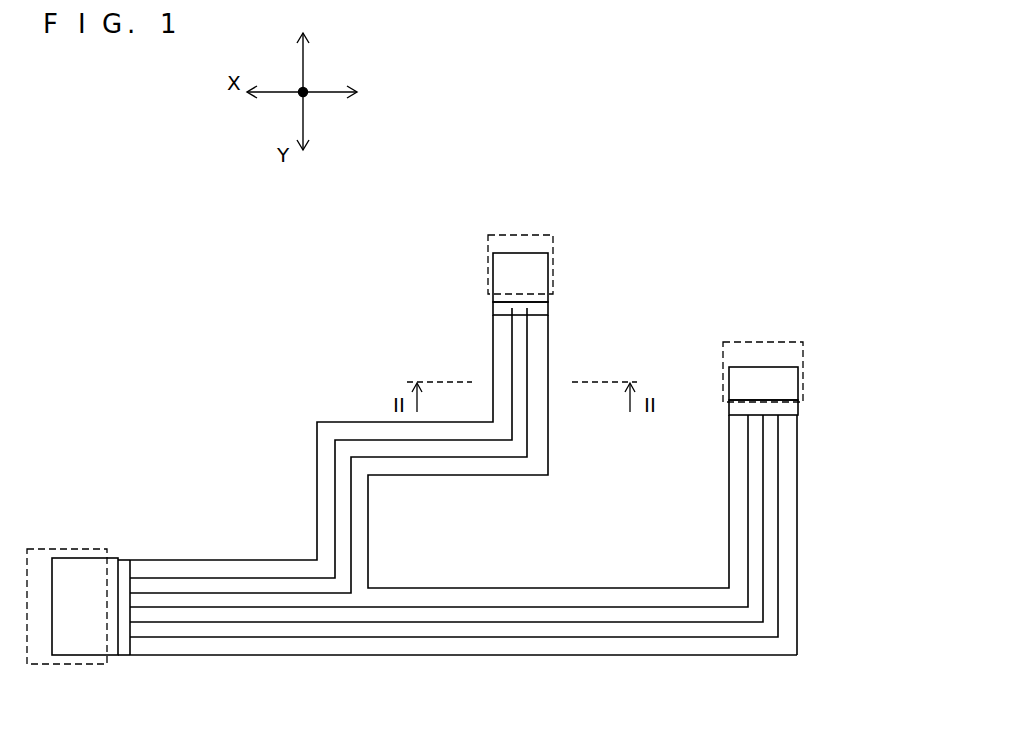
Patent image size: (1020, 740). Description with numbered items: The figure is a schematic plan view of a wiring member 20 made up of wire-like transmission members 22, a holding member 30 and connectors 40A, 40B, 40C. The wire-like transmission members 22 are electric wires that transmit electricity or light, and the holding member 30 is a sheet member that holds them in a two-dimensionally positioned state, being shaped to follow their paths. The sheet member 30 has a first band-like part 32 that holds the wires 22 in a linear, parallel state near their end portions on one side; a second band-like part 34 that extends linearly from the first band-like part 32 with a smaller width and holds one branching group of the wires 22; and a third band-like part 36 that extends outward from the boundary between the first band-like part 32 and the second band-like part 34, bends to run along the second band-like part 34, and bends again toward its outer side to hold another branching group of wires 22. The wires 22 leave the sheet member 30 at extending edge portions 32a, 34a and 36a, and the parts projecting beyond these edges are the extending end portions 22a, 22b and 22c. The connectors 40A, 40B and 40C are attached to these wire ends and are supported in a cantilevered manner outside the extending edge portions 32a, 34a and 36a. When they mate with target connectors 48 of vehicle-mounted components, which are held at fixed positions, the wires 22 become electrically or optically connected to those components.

The wiring member 20 is at (300, 437).
The wire-like transmission members 22 is at (337, 510).
The extending end portions 22a is at (128, 582).
The extending end portions 22b is at (745, 418).
The extending end portions 22c is at (508, 311).
The holding member 30 is at (503, 657).
The first band-like part 32 is at (233, 657).
The extending edge portion 32a is at (125, 657).
The second band-like part 34 is at (797, 612).
The extending edge portion 34a is at (800, 420).
The third band-like part 36 is at (549, 432).
The extending edge portion 36a is at (545, 306).
The connector 40A is at (78, 657).
The connector 40B is at (786, 365).
The connector 40C is at (548, 275).
The target connectors 48 is at (78, 549).